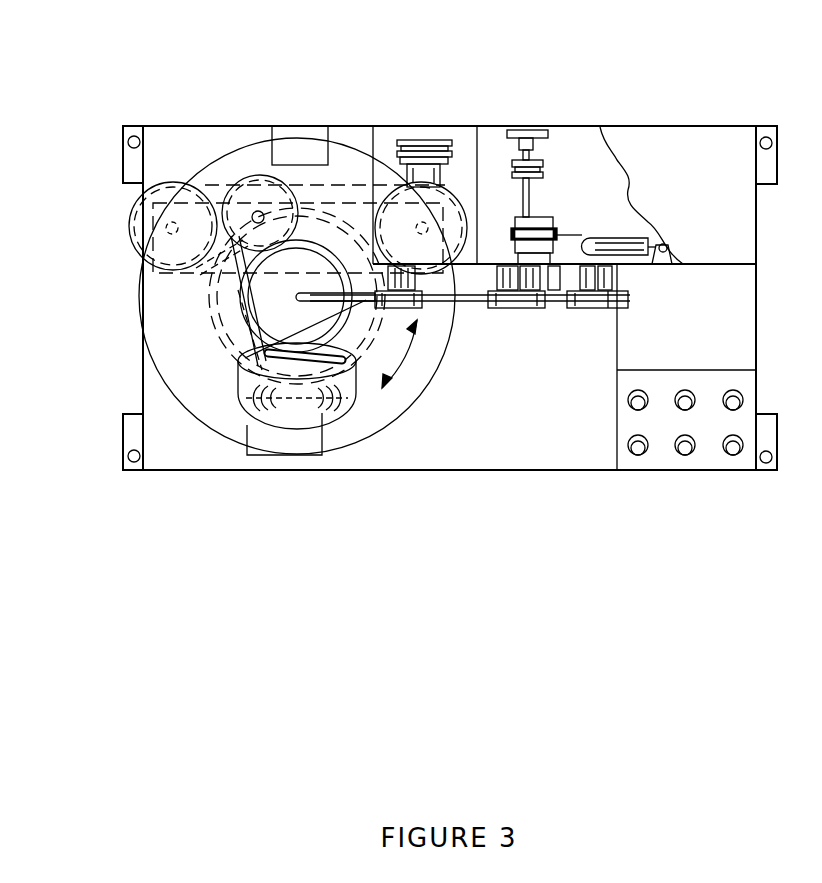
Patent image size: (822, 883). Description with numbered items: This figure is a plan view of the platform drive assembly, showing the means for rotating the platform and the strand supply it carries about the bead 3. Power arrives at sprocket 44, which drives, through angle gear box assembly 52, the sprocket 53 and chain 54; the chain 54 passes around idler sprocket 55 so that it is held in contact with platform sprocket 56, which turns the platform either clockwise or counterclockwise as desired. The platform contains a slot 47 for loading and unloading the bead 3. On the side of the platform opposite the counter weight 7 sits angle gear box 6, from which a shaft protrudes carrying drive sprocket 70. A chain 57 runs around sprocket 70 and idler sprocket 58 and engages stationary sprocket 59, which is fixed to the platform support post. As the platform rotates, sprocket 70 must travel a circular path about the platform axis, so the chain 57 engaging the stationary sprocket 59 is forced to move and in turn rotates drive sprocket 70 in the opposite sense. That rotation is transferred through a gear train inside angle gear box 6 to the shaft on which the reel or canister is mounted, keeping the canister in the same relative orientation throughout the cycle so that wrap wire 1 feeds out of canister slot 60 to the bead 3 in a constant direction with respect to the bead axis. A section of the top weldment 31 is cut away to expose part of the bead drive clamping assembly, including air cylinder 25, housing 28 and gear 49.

The wrap wire 1 is at (284, 328).
The bead 3 is at (292, 284).
The angle gear box 6 is at (295, 506).
The counter weight 7 is at (298, 131).
The air cylinder 25 is at (632, 134).
The housing 28 is at (509, 147).
The top weldment 31 is at (715, 132).
The sprocket 44 is at (402, 119).
The slot 47 is at (470, 445).
The gear 49 is at (544, 134).
The angle gear box assembly 52 is at (429, 139).
The sprocket 53 is at (564, 134).
The chain 54 is at (210, 166).
The idler sprocket 55 is at (117, 230).
The platform sprocket 56 is at (196, 290).
The chain 57 is at (219, 347).
The idler sprocket 58 is at (258, 162).
The stationary sprocket 59 is at (229, 315).
The canister slot 60 is at (301, 369).
The drive sprocket 70 is at (267, 454).